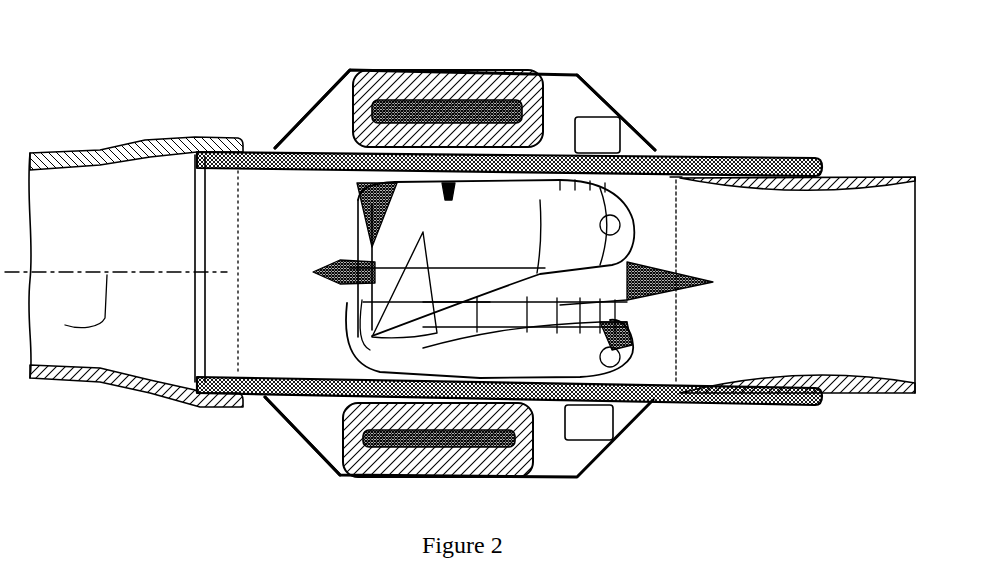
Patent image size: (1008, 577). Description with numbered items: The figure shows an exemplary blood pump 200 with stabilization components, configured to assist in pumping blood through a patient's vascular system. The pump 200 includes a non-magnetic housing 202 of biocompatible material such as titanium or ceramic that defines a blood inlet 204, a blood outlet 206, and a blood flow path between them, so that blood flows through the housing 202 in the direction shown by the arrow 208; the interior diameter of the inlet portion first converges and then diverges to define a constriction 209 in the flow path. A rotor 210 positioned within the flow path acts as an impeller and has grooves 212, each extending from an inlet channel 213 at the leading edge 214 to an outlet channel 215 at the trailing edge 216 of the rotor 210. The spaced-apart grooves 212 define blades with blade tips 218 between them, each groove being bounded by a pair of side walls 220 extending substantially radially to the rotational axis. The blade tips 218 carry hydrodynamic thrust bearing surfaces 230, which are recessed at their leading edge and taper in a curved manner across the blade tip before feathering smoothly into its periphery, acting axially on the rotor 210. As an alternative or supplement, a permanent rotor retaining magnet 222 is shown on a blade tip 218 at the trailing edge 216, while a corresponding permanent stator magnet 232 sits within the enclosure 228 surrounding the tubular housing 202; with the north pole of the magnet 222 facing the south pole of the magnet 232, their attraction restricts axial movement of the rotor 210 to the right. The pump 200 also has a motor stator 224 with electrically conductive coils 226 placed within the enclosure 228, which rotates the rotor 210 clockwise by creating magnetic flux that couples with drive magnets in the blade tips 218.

The blood pump 200 is at (254, 149).
The housing 202 is at (758, 158).
The blood inlet 204 is at (223, 270).
The blood outlet 206 is at (792, 272).
The arrow 208 is at (150, 208).
The constriction 209 is at (313, 147).
The rotor 210 is at (637, 208).
The grooves 212 is at (347, 338).
The inlet channel 213 is at (337, 262).
The leading edge 214 is at (337, 303).
The outlet channel 215 is at (620, 308).
The trailing edge 216 is at (660, 249).
The blade tips 218 is at (496, 258).
The side walls 220 is at (358, 217).
The rotor retaining magnet 222 is at (692, 347).
The motor stator 224 is at (314, 53).
The coils 226 is at (394, 63).
The enclosure 228 is at (577, 72).
The hydrodynamic thrust bearing surfaces 230 is at (290, 252).
The stator magnet 232 is at (617, 116).